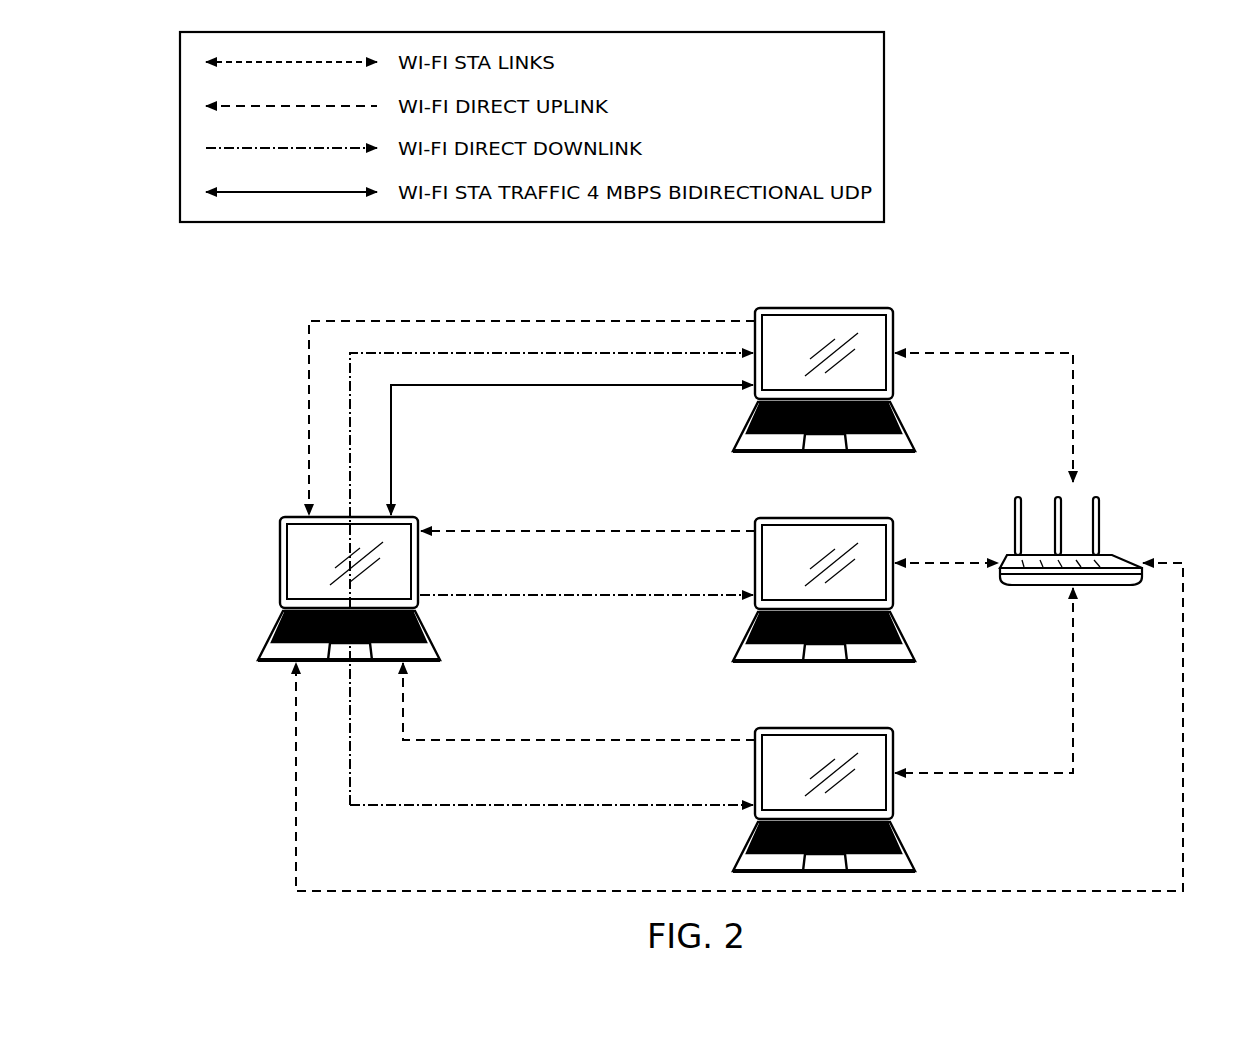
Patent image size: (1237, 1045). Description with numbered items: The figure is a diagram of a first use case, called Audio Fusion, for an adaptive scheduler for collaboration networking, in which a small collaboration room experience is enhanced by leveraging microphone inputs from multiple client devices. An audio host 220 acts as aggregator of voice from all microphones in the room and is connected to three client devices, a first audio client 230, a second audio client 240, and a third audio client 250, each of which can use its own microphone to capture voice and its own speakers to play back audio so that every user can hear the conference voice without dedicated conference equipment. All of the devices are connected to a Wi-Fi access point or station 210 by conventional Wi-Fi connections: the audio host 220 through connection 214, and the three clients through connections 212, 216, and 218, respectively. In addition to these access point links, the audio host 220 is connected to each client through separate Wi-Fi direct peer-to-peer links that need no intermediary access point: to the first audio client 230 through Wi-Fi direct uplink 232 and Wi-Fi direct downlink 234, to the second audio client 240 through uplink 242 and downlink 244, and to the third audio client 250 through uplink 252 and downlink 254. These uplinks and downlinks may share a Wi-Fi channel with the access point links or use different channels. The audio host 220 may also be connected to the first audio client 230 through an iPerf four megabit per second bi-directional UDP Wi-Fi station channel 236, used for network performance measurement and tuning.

The Wi-Fi access point or station 210 is at (1105, 555).
The conventional Wi-Fi connection 212 is at (983, 353).
The conventional Wi-Fi connection 214 is at (1040, 891).
The conventional Wi-Fi connection 216 is at (950, 563).
The conventional Wi-Fi connection 218 is at (980, 773).
The audio host 220 is at (420, 572).
The audio client #1 230 is at (893, 330).
The Wi-Fi direct uplink 232 is at (545, 321).
The Wi-Fi direct downlink 234 is at (350, 428).
The iPerf 4 Mbps bi-directional UDP Wi-Fi station channel 236 is at (391, 488).
The audio client #2 240 is at (755, 572).
The Wi-Fi direct uplink 242 is at (580, 531).
The Wi-Fi direct downlink 244 is at (563, 595).
The audio client #3 250 is at (755, 782).
The Wi-Fi direct uplink 252 is at (620, 740).
The Wi-Fi direct downlink 254 is at (590, 805).